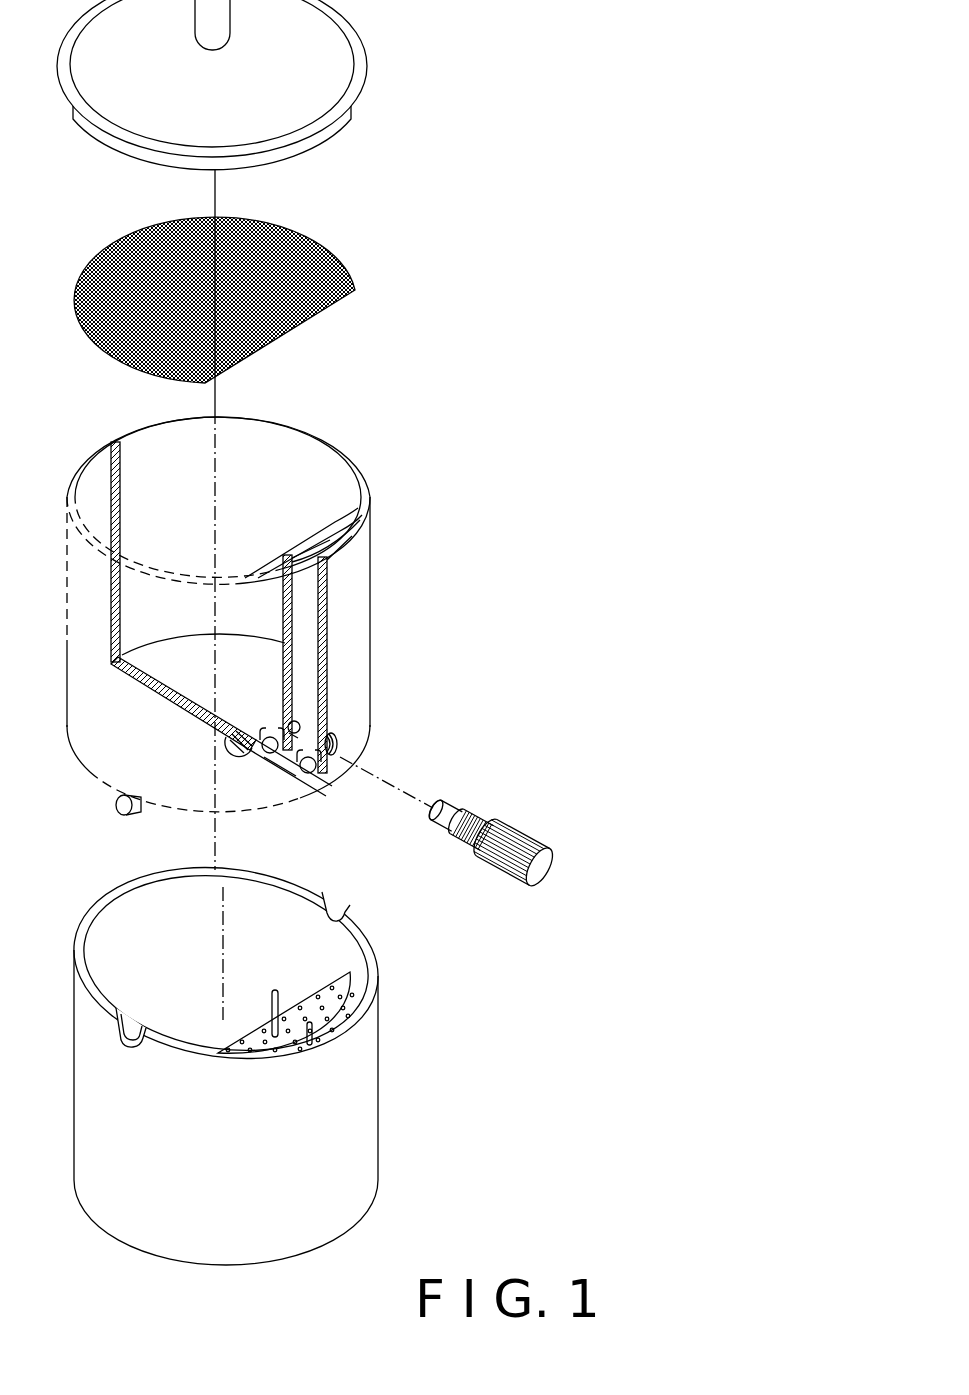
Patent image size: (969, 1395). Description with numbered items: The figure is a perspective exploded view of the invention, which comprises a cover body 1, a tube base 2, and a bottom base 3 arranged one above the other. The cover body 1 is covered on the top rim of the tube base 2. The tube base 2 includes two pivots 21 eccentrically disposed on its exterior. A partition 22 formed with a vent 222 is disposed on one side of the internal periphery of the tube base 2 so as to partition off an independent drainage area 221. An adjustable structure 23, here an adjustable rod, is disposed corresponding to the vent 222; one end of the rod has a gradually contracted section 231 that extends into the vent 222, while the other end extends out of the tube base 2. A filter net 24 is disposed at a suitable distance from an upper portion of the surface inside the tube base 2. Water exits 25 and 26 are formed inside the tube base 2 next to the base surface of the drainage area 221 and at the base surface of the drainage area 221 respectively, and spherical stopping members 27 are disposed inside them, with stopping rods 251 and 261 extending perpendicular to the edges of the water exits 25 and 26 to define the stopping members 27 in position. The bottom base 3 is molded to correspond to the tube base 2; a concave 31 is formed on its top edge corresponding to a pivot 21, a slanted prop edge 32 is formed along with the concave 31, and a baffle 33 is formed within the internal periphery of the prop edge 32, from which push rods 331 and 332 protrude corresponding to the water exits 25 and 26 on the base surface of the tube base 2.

The cover body 1 is at (332, 78).
The filter net 24 is at (317, 282).
The tube base 2 is at (360, 582).
The partition 22 is at (335, 520).
The drainage area 221 is at (333, 543).
The vent 222 is at (300, 722).
The pivot 21 is at (238, 746).
The water exit 25 is at (278, 757).
The spherical stopping member 27 is at (270, 753).
The stopping rod 251 is at (288, 753).
The water exit 26 is at (310, 773).
The stopping rod 261 is at (330, 753).
The gradually contracted section 231 is at (437, 805).
The adjustable structure 23 is at (503, 835).
The bottom base 3 is at (358, 1105).
The concave 31 is at (337, 917).
The prop edge 32 is at (360, 1007).
The baffle 33 is at (350, 978).
The push rod 332 is at (290, 1013).
The push rod 331 is at (313, 1038).